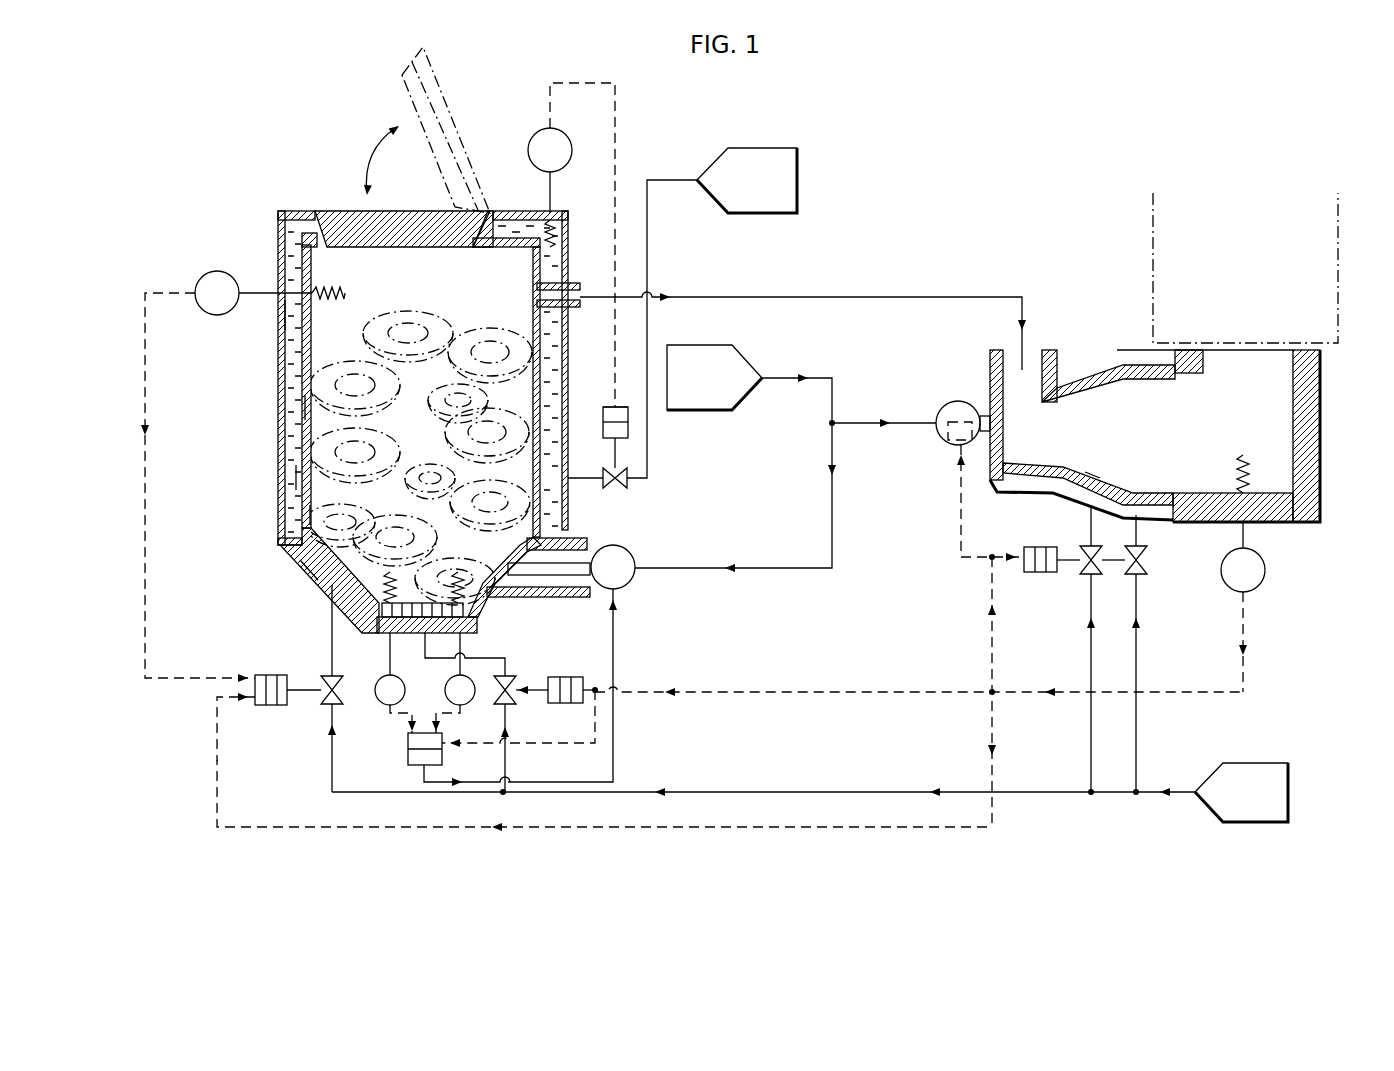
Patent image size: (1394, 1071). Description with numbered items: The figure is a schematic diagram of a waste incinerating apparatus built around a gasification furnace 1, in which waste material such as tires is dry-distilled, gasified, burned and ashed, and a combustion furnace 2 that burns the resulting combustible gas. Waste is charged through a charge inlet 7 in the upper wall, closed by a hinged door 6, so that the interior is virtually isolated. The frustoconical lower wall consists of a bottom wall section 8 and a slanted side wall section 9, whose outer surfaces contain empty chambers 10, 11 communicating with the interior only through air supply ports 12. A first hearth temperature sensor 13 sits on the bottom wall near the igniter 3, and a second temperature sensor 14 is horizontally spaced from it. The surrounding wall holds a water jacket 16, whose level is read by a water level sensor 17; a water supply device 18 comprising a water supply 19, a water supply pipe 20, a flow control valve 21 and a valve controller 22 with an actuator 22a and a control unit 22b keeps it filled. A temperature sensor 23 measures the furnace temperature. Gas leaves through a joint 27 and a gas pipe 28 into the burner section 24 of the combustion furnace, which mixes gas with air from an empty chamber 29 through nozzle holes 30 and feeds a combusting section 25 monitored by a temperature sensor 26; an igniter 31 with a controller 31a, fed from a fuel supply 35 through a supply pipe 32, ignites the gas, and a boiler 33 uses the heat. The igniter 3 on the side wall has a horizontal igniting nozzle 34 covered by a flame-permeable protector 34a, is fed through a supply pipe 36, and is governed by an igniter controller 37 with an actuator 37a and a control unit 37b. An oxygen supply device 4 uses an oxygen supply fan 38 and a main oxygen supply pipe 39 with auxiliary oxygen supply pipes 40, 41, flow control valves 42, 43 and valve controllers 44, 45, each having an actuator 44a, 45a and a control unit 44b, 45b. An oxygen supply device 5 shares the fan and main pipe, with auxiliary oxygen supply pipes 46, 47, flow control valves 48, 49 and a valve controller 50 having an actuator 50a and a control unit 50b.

The gasification furnace 1 is at (428, 351).
The combustion furnace 2 is at (1184, 454).
The igniter 3 is at (604, 679).
The oxygen supply device 4 is at (352, 809).
The oxygen supply device 5 is at (946, 681).
The hinged door 6 is at (350, 230).
The charge inlet 7 is at (478, 225).
The bottom wall section 8 is at (388, 652).
The slanted side wall section 9 is at (324, 583).
The empty chamber 10 is at (424, 650).
The empty chamber 11 is at (305, 568).
The air supply ports 12 is at (372, 616).
The temperature sensor 13 is at (465, 702).
The temperature sensor 14 is at (385, 702).
The water jacket 16 is at (290, 359).
The water level sensor 17 is at (530, 140).
The water supply device 18 is at (792, 148).
The water supply 19 is at (782, 180).
The water supply pipe 20 is at (650, 275).
The flow control valve 21 is at (638, 490).
The valve controller 22 is at (664, 453).
The actuator 22a is at (628, 430).
The control unit 22b is at (628, 413).
The temperature sensor 23 is at (217, 271).
The burner section 24 is at (1102, 375).
The combusting section 25 is at (1270, 412).
The temperature sensor 26 is at (1265, 575).
The joint 27 is at (578, 287).
The gas pipe 28 is at (933, 297).
The empty chamber 29 is at (1045, 470).
The nozzle holes 30 is at (1114, 454).
The igniter 31 is at (936, 414).
The controller 31a is at (952, 440).
The supply pipe 32 is at (900, 428).
The boiler 33 is at (1338, 310).
The igniting nozzle 34 is at (600, 547).
The flame-permeable protector 34a is at (575, 560).
The fuel supply 35 is at (750, 375).
The supply pipe 36 is at (790, 570).
The igniter controller 37 is at (424, 778).
The actuator 37a is at (423, 778).
The control unit 37b is at (408, 746).
The oxygen supply fan 38 is at (1222, 795).
The main oxygen supply pipe 39 is at (908, 790).
The auxiliary oxygen supply pipe 40 is at (505, 765).
The auxiliary oxygen supply pipe 41 is at (332, 740).
The flow control valve 42 is at (514, 698).
The flow control valve 43 is at (325, 680).
The valve controller 44 is at (550, 667).
The actuator 44a is at (520, 652).
The control unit 44b is at (580, 672).
The valve controller 45 is at (580, 725).
The actuator 45a is at (280, 706).
The control unit 45b is at (266, 706).
The auxiliary oxygen supply pipe 46 is at (1069, 648).
The auxiliary oxygen supply pipe 47 is at (1146, 653).
The flow control valve 48 is at (1088, 550).
The flow control valve 49 is at (1145, 565).
The valve controller 50 is at (1018, 636).
The actuator 50a is at (1048, 574).
The control unit 50b is at (1032, 574).